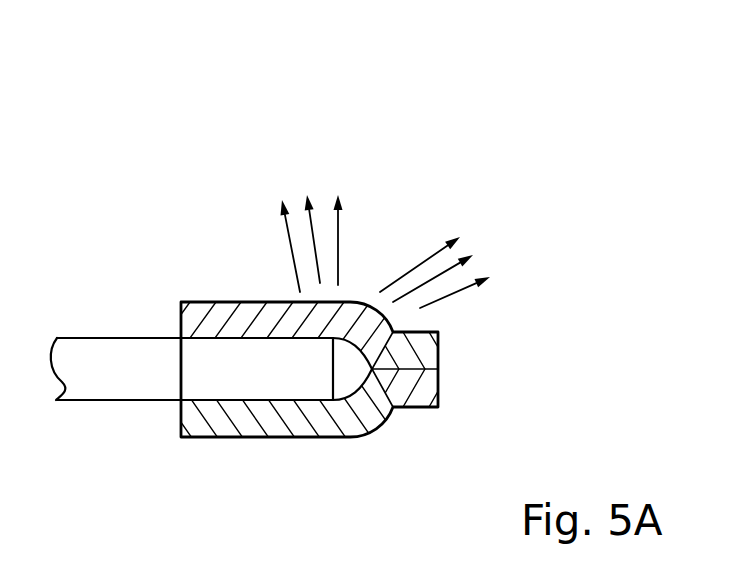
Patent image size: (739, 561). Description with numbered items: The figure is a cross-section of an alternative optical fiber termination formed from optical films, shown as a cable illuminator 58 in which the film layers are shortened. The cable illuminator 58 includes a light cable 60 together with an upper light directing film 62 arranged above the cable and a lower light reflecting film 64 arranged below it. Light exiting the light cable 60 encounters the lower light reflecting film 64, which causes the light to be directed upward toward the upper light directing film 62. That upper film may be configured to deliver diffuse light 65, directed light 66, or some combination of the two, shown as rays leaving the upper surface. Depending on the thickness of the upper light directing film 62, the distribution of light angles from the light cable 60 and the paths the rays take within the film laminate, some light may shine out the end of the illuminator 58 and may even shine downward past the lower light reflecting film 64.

The cable illuminator 58 is at (263, 305).
The light cable 60 is at (128, 383).
The upper light directing film 62 is at (230, 303).
The lower light reflecting film 64 is at (382, 412).
The diffuse light 65 is at (318, 250).
The directed light 66 is at (427, 283).